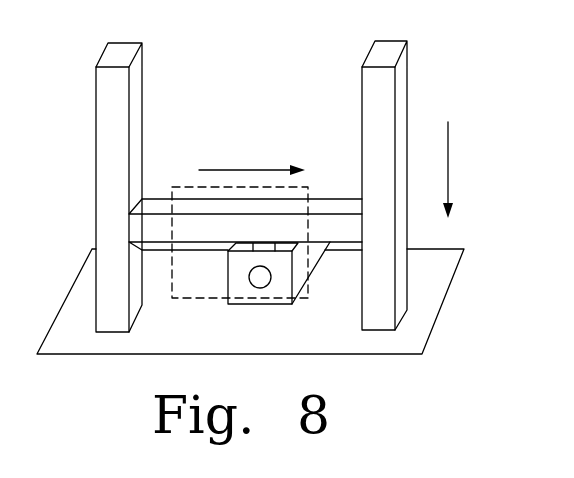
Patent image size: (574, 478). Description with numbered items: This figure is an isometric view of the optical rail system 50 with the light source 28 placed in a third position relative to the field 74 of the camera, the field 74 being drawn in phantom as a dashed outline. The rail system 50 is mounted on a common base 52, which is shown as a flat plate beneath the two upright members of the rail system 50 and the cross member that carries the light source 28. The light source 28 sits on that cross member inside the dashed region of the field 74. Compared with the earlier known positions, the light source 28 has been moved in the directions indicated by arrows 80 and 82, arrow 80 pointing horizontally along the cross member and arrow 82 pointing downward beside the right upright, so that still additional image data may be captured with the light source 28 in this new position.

The rail system 50 is at (427, 109).
The base 52 is at (438, 293).
The field 74 is at (193, 298).
The light source 28 is at (299, 316).
The arrow 80 is at (222, 170).
The arrow 82 is at (448, 170).